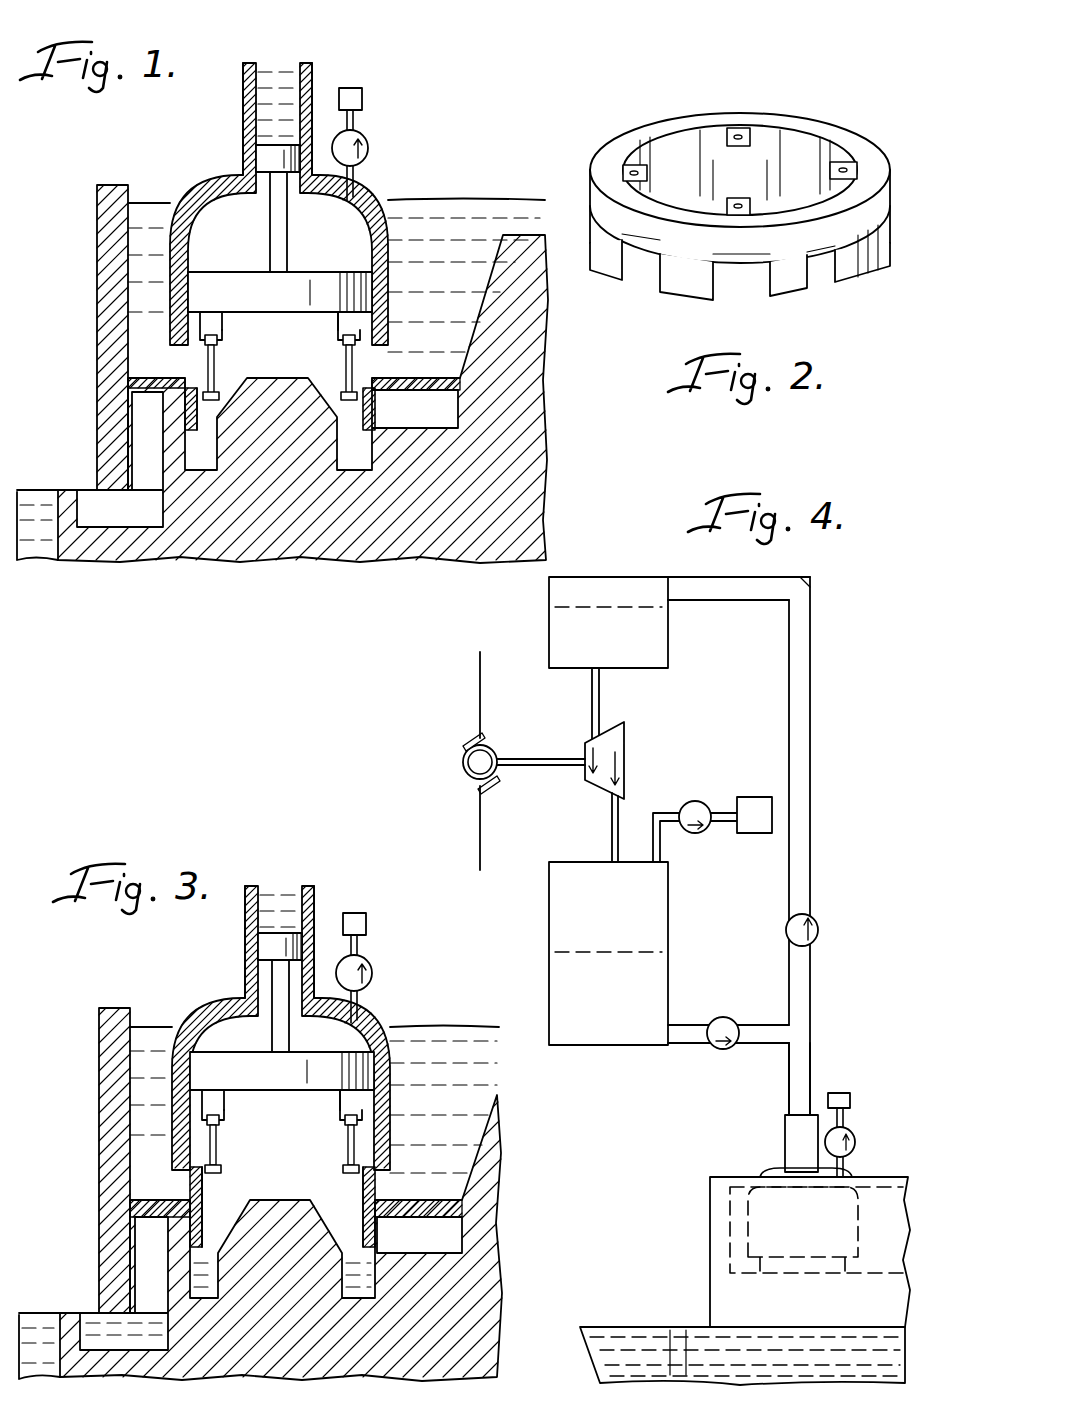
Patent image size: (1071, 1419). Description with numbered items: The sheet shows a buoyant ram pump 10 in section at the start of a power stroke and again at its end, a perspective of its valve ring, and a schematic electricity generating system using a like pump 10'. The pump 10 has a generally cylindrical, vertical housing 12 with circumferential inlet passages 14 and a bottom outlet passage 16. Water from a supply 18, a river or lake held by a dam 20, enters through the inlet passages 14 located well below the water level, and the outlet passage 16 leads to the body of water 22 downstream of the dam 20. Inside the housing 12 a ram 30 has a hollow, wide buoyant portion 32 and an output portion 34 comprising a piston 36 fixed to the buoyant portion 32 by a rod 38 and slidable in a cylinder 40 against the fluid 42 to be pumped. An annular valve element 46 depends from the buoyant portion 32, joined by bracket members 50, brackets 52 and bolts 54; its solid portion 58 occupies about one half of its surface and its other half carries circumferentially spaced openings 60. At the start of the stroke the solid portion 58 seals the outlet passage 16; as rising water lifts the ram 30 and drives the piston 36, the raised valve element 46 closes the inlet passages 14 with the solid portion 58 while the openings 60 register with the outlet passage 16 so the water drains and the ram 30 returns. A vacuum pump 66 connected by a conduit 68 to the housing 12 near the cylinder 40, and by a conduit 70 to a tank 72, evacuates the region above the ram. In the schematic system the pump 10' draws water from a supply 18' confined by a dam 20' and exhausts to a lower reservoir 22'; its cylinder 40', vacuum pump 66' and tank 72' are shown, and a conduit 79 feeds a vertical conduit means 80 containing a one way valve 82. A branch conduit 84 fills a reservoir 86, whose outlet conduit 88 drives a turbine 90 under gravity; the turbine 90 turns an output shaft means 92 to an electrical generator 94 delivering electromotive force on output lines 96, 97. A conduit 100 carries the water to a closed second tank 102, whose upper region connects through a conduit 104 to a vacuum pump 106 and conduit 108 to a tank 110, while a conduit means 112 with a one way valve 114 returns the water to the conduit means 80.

In FIG. 1, the pump 10 is at (259, 220).
In FIG. 3, the pump 10 is at (298, 1036).
In FIG. 4, the pump 10' is at (797, 1248).
In FIG. 1, the housing 12 is at (190, 185).
In FIG. 3, the housing 12 is at (259, 1028).
In FIG. 1, the inlet passages 14 is at (180, 366).
In FIG. 3, the inlet passages 14 is at (290, 1183).
In FIG. 1, the outlet passage 16 is at (148, 452).
In FIG. 3, the outlet passage 16 is at (301, 1238).
In FIG. 1, the supply of liquid 18 is at (325, 246).
In FIG. 3, the supply of liquid 18 is at (314, 1075).
In FIG. 4, the reservoir or supply 18' is at (809, 1201).
In FIG. 1, the dam 20 is at (77, 337).
In FIG. 3, the dam 20 is at (78, 1155).
In FIG. 4, the dam 20' is at (773, 1247).
In FIG. 1, the body of water 22 is at (37, 505).
In FIG. 3, the body of water 22 is at (90, 1324).
In FIG. 4, the reservoir 22' is at (742, 1335).
In FIG. 1, the ram 30 is at (256, 268).
In FIG. 3, the ram 30 is at (113, 1070).
In FIG. 1, the buoyant portion 32 is at (345, 284).
In FIG. 3, the buoyant portion 32 is at (282, 1056).
In FIG. 1, the output portion 34 is at (266, 218).
In FIG. 1, the piston 36 is at (268, 157).
In FIG. 3, the piston 36 is at (244, 935).
In FIG. 1, the rod 38 is at (285, 225).
In FIG. 3, the rod 38 is at (239, 995).
In FIG. 1, the cylinder 40 is at (265, 94).
In FIG. 3, the cylinder 40 is at (294, 912).
In FIG. 4, the cylinder 40' is at (780, 1128).
In FIG. 1, the fluid 42 is at (280, 75).
In FIG. 3, the fluid 42 is at (274, 882).
In FIG. 1, the annular valve element 46 is at (182, 404).
In FIG. 2, the annular valve element 46 is at (878, 137).
In FIG. 3, the annular valve element 46 is at (207, 1207).
In FIG. 1, the bracket members 50 is at (212, 330).
In FIG. 3, the bracket members 50 is at (301, 1104).
In FIG. 1, the brackets 52 is at (348, 385).
In FIG. 2, the brackets 52 is at (630, 163).
In FIG. 3, the brackets 52 is at (282, 1144).
In FIG. 1, the bolts 54 is at (340, 332).
In FIG. 3, the bolts 54 is at (302, 1119).
In FIG. 1, the solid portion 58 is at (196, 418).
In FIG. 2, the solid portion 58 is at (715, 278).
In FIG. 3, the solid portion 58 is at (241, 1207).
In FIG. 2, the openings 60 is at (638, 272).
In FIG. 3, the openings 60 is at (286, 1207).
In FIG. 1, the vacuum pump 66 is at (377, 134).
In FIG. 3, the vacuum pump 66 is at (376, 963).
In FIG. 4, the vacuum pump 66' is at (873, 1131).
In FIG. 1, the conduit 68 is at (389, 173).
In FIG. 3, the conduit 68 is at (382, 995).
In FIG. 1, the conduit 70 is at (379, 96).
In FIG. 3, the conduit 70 is at (377, 924).
In FIG. 1, the reservoir or tank 72 is at (357, 73).
In FIG. 3, the reservoir or tank 72 is at (360, 900).
In FIG. 4, the reservoir or tank 72' is at (853, 1077).
In FIG. 4, the conduit 79 is at (790, 1062).
In FIG. 4, the first system conduit means 80 is at (812, 660).
In FIG. 4, the one way valve means 82 is at (820, 932).
In FIG. 4, the branch conduit 84 is at (718, 595).
In FIG. 4, the tank or reservoir 86 is at (565, 632).
In FIG. 4, the conduit 88 is at (592, 710).
In FIG. 4, the turbine 90 is at (628, 740).
In FIG. 4, the output shaft means 92 is at (535, 767).
In FIG. 4, the electrical generator 94 is at (463, 766).
In FIG. 4, the output line 96 is at (476, 686).
In FIG. 4, the output line 97 is at (478, 848).
In FIG. 4, the conduit 100 is at (612, 840).
In FIG. 4, the second tank or reservoir 102 is at (549, 924).
In FIG. 4, the conduit 104 is at (660, 810).
In FIG. 4, the vacuum pump 106 is at (695, 838).
In FIG. 4, the conduit 108 is at (722, 810).
In FIG. 4, the tank or reservoir 110 is at (752, 826).
In FIG. 4, the conduit means 112 is at (688, 1025).
In FIG. 4, the one way valve 114 is at (722, 1050).